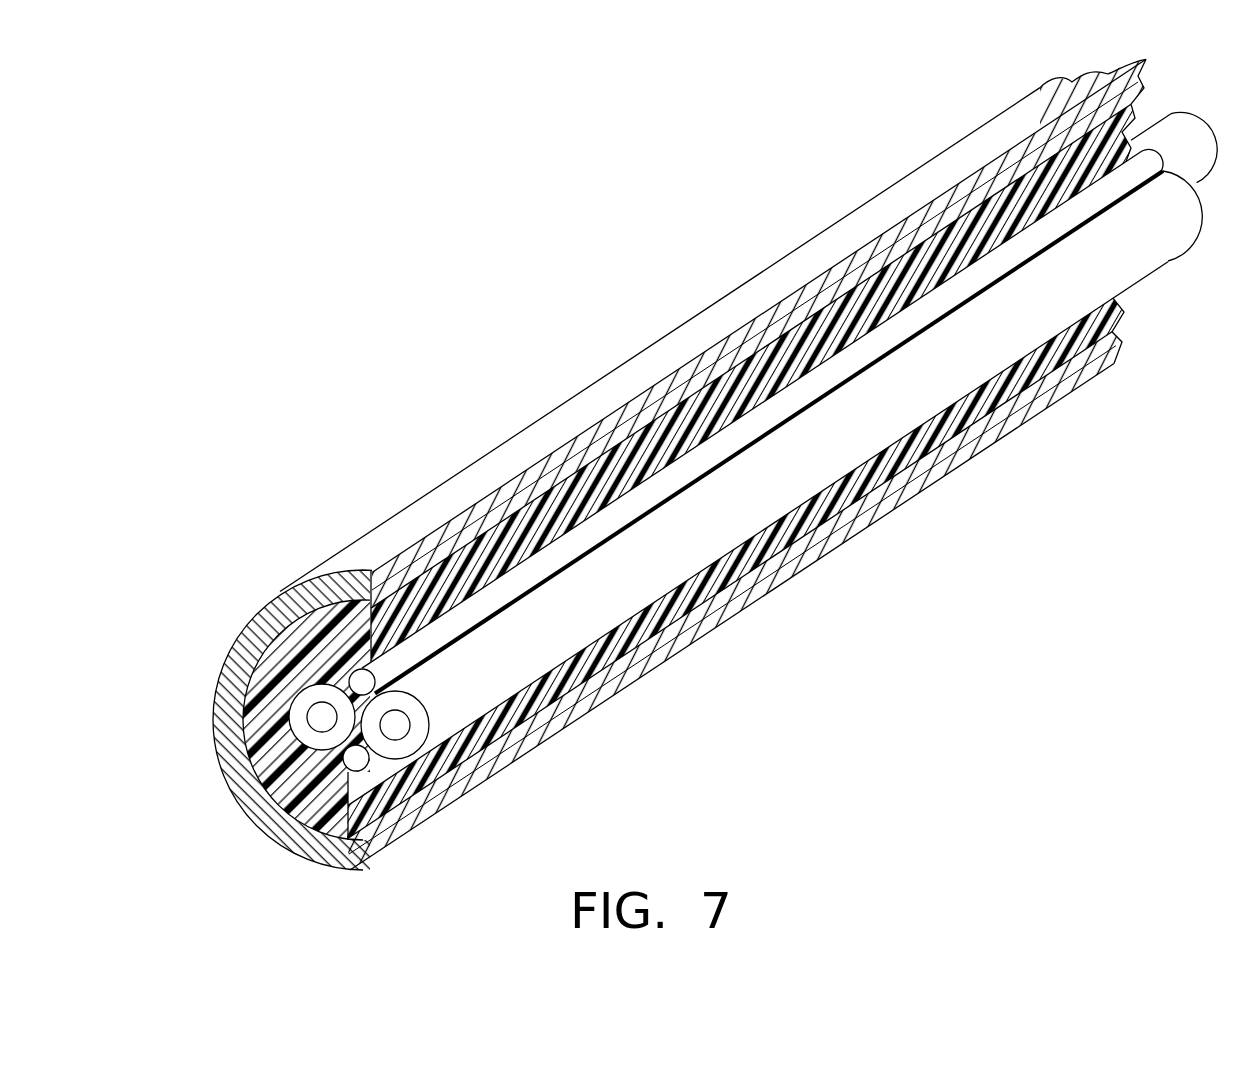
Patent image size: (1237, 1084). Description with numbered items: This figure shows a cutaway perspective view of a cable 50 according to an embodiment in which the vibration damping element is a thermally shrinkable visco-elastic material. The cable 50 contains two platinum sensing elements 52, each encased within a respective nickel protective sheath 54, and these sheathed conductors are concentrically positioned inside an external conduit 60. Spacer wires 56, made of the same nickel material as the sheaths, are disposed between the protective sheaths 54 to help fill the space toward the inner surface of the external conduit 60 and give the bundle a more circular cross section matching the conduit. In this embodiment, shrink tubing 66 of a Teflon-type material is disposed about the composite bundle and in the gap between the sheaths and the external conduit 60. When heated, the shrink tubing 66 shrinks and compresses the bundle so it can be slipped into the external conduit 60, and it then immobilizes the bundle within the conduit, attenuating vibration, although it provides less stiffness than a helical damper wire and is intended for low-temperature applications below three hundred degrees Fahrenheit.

The cable 50 is at (691, 472).
The sensing element 52 is at (318, 708).
The protective sheath 54 is at (542, 673).
The spacer wire 56 is at (360, 671).
The external conduit 60 is at (268, 842).
The shrink tubing 66 is at (678, 608).